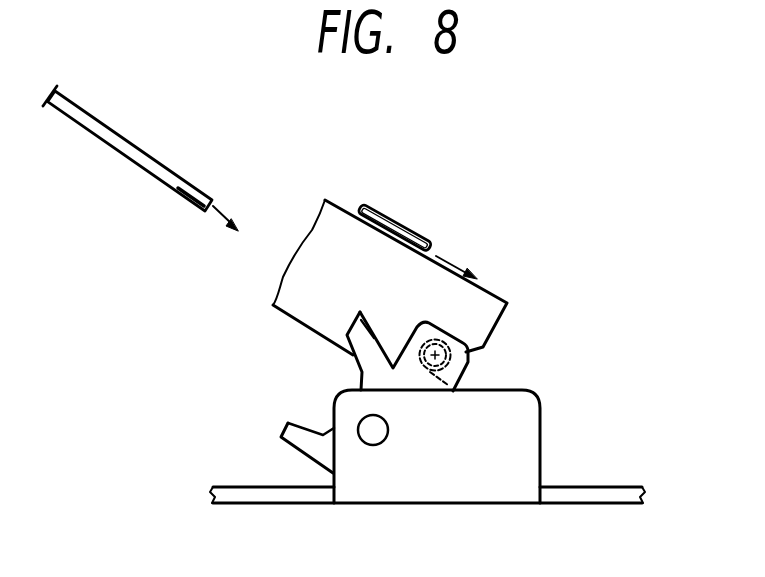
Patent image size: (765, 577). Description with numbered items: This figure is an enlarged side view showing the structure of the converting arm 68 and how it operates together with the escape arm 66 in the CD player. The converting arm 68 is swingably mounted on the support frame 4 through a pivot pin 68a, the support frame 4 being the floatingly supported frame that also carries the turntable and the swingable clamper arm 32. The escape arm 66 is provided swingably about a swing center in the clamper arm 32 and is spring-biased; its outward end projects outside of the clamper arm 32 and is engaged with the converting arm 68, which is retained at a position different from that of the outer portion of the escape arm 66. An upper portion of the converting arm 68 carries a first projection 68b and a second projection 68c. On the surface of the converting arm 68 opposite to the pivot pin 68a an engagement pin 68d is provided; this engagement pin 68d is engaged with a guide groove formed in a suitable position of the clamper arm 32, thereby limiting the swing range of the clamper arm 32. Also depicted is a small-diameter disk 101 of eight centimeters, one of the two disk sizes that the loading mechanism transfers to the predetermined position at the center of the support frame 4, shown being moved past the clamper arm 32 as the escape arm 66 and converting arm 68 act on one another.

The support frame 4 is at (280, 495).
The clamper arm 32 is at (327, 250).
The escape arm 66 is at (391, 219).
The converting arm 68 is at (386, 292).
The pivot pin 68a is at (377, 435).
The first projection 68b is at (297, 442).
The second projection 68c is at (374, 338).
The engagement pin 68d is at (447, 356).
The disk 101 is at (118, 140).